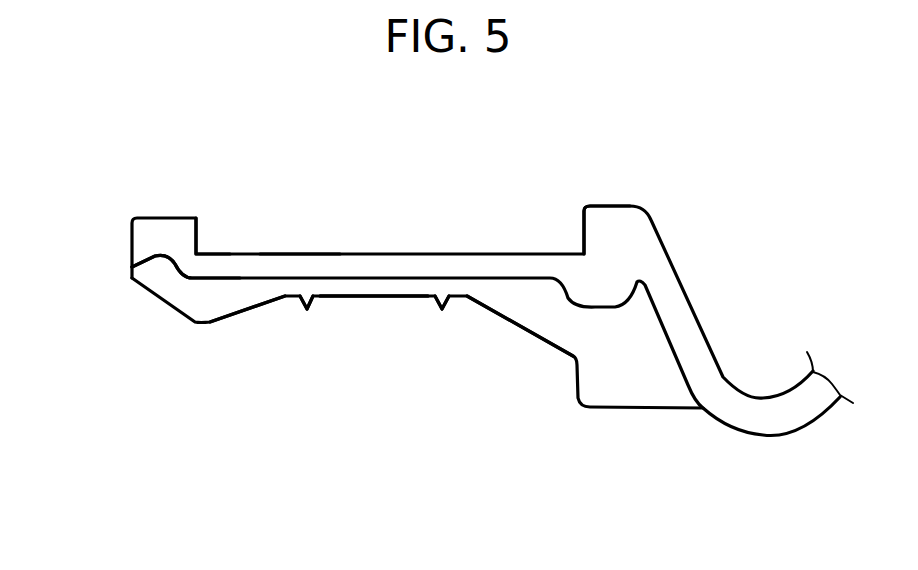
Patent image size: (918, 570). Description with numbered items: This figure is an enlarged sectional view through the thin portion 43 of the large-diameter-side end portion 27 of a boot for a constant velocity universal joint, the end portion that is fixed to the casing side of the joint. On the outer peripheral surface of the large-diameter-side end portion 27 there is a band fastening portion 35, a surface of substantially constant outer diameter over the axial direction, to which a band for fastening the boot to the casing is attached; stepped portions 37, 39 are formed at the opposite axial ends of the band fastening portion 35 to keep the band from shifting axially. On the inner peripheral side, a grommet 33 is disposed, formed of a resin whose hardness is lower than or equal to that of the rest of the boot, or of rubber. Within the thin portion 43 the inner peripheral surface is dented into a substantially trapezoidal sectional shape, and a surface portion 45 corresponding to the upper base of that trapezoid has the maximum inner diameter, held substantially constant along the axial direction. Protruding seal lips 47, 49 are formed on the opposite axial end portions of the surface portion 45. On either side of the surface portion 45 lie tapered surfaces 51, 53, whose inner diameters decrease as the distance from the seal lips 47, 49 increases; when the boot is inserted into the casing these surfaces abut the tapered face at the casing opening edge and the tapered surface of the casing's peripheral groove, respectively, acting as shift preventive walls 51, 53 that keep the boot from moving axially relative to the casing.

The large-diameter-side end portion 27 is at (382, 235).
The grommet 33 is at (188, 295).
The band fastening portion 35 is at (298, 255).
The stepped portion 37 is at (583, 225).
The stepped portion 39 is at (198, 239).
The thin portion 43 is at (378, 307).
The surface portion 45 is at (357, 298).
The seal lip 47 is at (442, 312).
The seal lip 49 is at (308, 312).
The tapered surface (shift preventive wall) 51 is at (513, 320).
The tapered surface (shift preventive wall) 53 is at (237, 320).